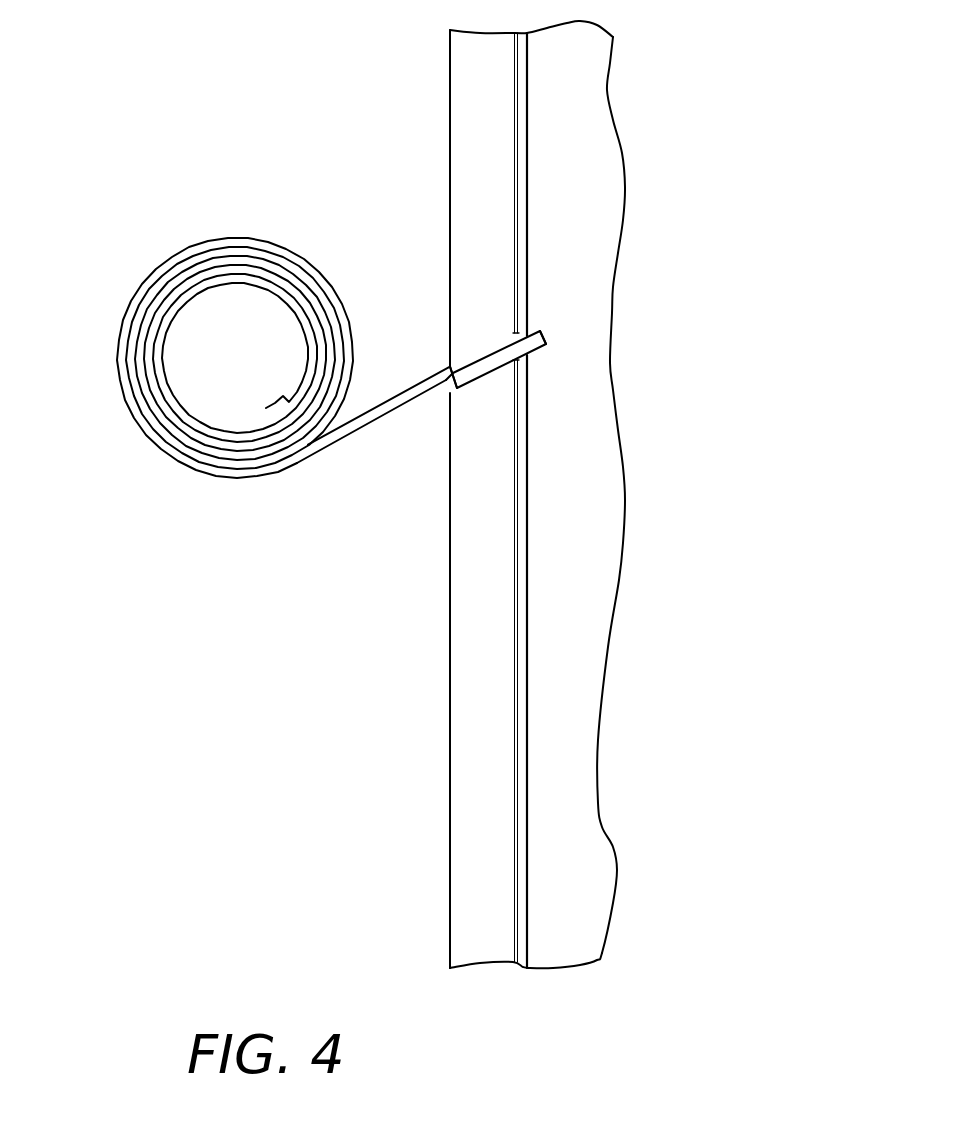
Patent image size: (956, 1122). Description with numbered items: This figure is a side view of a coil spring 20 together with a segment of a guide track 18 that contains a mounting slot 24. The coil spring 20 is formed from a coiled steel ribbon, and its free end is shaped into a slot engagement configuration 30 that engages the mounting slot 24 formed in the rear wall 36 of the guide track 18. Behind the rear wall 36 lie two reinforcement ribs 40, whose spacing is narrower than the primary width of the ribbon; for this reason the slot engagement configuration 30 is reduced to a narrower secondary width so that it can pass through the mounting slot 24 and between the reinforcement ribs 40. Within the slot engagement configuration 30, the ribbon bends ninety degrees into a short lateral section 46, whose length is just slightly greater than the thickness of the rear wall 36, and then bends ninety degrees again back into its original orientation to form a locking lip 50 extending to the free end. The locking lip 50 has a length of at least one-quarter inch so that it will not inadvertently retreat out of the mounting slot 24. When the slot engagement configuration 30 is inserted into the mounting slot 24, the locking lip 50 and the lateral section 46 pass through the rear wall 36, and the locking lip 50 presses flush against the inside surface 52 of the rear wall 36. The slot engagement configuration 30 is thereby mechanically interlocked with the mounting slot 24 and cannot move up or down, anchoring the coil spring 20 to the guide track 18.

The guide track 18 is at (473, 615).
The coil spring 20 is at (118, 360).
The mounting slot 24 is at (530, 357).
The slot engagement configuration 30 is at (537, 322).
The rear wall 36 is at (520, 198).
The reinforcement ribs 40 is at (595, 163).
The lateral section 46 is at (447, 377).
The locking lip 50 is at (497, 368).
The inside surface 52 is at (528, 273).